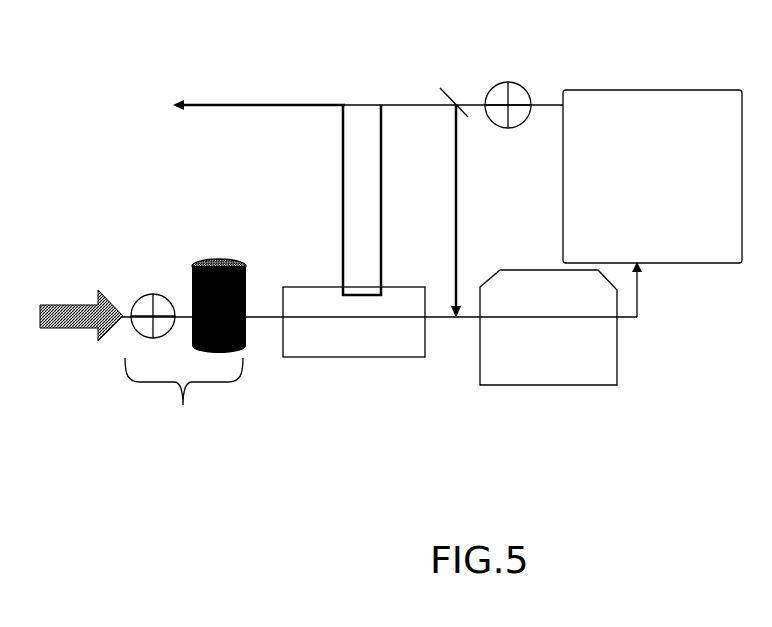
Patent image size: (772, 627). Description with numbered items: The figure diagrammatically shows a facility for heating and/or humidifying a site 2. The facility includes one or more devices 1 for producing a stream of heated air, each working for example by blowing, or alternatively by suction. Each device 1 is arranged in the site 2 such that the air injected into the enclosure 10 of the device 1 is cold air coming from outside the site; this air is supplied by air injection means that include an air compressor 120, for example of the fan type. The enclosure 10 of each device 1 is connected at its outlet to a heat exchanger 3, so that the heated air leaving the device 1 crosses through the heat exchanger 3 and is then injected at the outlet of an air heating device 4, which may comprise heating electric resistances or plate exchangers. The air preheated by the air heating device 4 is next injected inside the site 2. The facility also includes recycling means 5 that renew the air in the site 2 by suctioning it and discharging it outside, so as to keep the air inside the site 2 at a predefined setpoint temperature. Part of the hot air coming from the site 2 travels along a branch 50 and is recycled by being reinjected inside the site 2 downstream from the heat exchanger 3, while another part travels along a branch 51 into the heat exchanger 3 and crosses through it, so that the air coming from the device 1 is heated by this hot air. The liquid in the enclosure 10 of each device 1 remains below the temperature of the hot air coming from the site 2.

The device 1 is at (178, 326).
The air compressor 120 is at (148, 293).
The enclosure 10 is at (220, 257).
The heat exchanger 3 is at (388, 347).
The air heating device 4 is at (575, 367).
The site 2 is at (656, 219).
The recycling means 5 is at (512, 85).
The branch 50 is at (459, 212).
The branch 51 is at (384, 212).